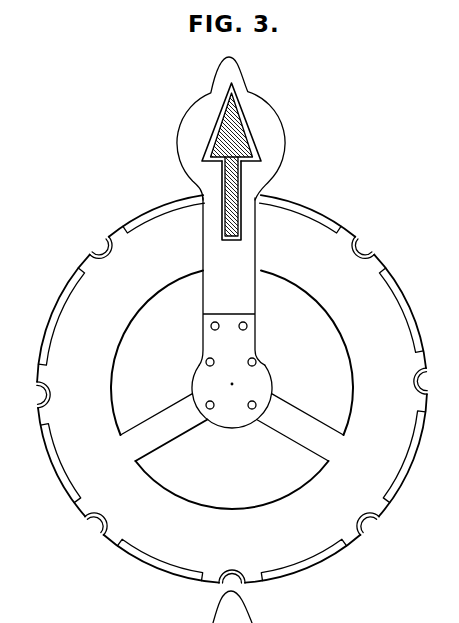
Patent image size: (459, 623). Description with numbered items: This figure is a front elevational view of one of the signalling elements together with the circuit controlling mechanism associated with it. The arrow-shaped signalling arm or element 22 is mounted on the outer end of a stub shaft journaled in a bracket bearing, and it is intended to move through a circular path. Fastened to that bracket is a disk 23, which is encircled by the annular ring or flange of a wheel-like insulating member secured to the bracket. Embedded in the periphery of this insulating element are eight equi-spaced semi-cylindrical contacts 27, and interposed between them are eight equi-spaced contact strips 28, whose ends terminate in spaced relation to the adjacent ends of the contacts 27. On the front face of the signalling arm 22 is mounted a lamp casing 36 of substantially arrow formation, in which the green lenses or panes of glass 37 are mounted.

The signalling arm or element 22 is at (231, 233).
The disk 23 is at (232, 390).
The semi-cylindrical contacts 27 is at (83, 524).
The contact strips 28 is at (130, 223).
The lamp casing 36 is at (213, 125).
The green lenses or panes of glass 37 is at (206, 152).